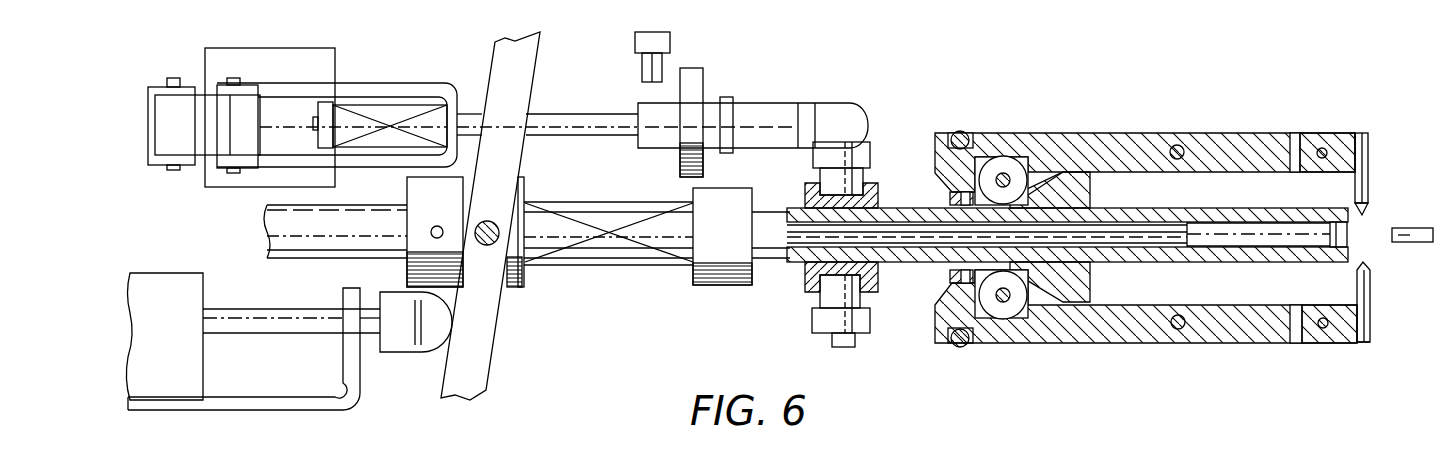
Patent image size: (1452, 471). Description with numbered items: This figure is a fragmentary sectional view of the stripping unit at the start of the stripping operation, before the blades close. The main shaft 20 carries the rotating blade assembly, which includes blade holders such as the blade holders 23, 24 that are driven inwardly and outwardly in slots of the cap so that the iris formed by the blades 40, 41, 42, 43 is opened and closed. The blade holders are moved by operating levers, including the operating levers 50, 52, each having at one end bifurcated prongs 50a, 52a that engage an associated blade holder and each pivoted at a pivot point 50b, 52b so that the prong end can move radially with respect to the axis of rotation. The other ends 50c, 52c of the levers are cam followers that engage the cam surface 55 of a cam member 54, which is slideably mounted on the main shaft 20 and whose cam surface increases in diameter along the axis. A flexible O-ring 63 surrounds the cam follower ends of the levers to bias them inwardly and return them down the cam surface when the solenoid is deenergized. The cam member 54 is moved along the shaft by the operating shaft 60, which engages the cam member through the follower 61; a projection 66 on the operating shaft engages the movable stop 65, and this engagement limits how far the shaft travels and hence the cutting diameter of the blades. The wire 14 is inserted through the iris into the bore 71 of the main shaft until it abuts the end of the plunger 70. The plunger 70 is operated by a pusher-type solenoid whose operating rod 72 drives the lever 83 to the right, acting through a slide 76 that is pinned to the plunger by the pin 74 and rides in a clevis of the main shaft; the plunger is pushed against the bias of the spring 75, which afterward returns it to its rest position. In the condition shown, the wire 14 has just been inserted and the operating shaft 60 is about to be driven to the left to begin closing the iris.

The wire 14 is at (1397, 243).
The main shaft 20 is at (267, 255).
The blade holder 23 is at (1310, 335).
The blade holder 24 is at (1342, 145).
The blade 40 is at (1357, 168).
The blade 41 is at (1370, 280).
The blade 42 is at (1367, 342).
The blade 43 is at (1370, 198).
The operating lever 50 is at (1143, 330).
The bifurcated prongs 50a is at (1293, 342).
The pivot point 50b is at (1185, 325).
The cam follower end 50c is at (1012, 307).
The operating lever 52 is at (1218, 148).
The bifurcated prongs 52a is at (1295, 150).
The pivot point 52b is at (1177, 147).
The cam follower end 52c is at (992, 168).
The cam member 54 is at (1090, 278).
The cam surface 55 is at (1045, 176).
The operating shaft 60 is at (470, 122).
The follower 61 is at (838, 175).
The O-ring 63 is at (967, 133).
The movable stop 65 is at (660, 65).
The projection 66 is at (687, 87).
The plunger 70 is at (1183, 243).
The bore 71 is at (1340, 233).
The operating rod 72 is at (287, 325).
The pin 74 is at (437, 226).
The spring 75 is at (622, 203).
The slide 76 is at (407, 195).
The lever 83 is at (482, 363).